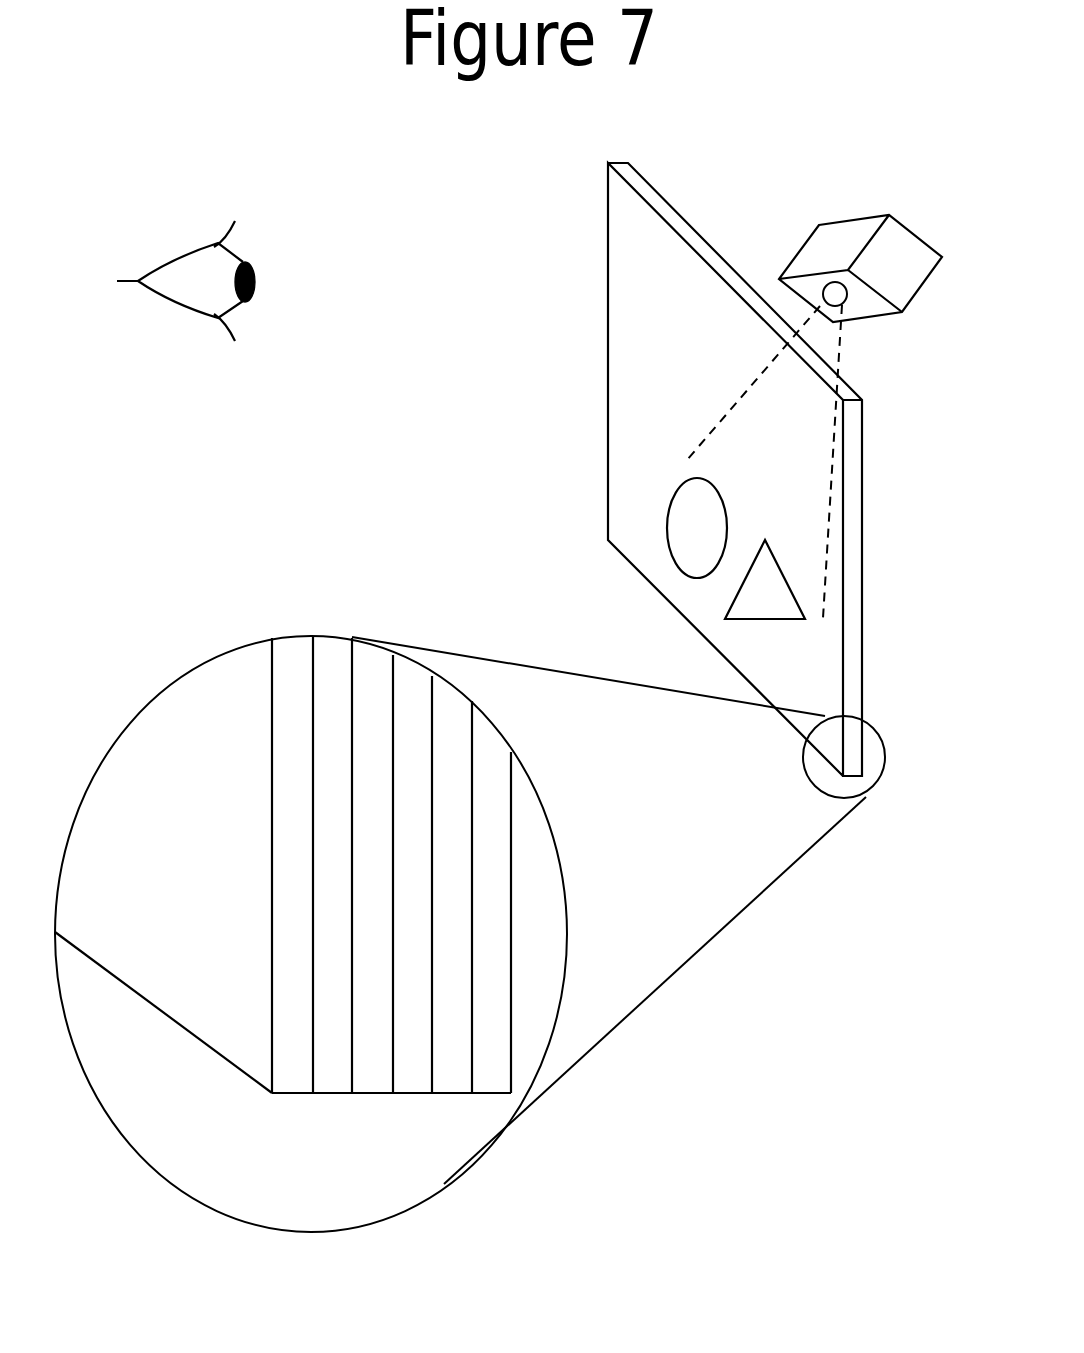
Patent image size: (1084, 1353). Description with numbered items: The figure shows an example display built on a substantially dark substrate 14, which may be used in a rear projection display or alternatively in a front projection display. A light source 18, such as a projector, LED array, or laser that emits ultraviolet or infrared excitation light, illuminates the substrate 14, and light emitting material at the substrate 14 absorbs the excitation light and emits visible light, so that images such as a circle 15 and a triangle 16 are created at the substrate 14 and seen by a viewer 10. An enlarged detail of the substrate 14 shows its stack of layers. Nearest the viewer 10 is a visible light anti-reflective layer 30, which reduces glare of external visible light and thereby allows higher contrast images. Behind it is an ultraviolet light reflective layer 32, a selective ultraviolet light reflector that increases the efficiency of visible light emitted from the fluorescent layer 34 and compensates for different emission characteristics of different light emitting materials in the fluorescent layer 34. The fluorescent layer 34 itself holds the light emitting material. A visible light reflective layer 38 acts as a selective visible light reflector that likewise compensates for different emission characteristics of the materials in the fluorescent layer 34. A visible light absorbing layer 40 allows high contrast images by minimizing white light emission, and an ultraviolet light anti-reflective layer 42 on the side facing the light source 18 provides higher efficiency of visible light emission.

The viewer 10 is at (233, 243).
The substrate 14 is at (727, 260).
The circle 15 is at (686, 520).
The triangle 16 is at (767, 597).
The light source 18 is at (843, 242).
The visible light anti-reflective layer 30 is at (292, 1073).
The ultraviolet light reflective layer 32 is at (333, 1073).
The fluorescent layer 34 is at (373, 1073).
The visible light reflective layer 38 is at (412, 1073).
The visible light absorbing layer 40 is at (451, 1073).
The ultraviolet light anti-reflective layer 42 is at (490, 1073).